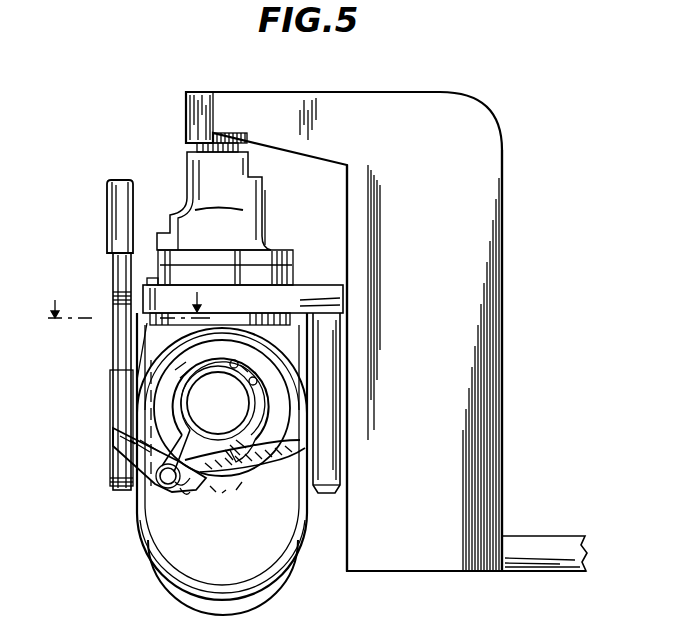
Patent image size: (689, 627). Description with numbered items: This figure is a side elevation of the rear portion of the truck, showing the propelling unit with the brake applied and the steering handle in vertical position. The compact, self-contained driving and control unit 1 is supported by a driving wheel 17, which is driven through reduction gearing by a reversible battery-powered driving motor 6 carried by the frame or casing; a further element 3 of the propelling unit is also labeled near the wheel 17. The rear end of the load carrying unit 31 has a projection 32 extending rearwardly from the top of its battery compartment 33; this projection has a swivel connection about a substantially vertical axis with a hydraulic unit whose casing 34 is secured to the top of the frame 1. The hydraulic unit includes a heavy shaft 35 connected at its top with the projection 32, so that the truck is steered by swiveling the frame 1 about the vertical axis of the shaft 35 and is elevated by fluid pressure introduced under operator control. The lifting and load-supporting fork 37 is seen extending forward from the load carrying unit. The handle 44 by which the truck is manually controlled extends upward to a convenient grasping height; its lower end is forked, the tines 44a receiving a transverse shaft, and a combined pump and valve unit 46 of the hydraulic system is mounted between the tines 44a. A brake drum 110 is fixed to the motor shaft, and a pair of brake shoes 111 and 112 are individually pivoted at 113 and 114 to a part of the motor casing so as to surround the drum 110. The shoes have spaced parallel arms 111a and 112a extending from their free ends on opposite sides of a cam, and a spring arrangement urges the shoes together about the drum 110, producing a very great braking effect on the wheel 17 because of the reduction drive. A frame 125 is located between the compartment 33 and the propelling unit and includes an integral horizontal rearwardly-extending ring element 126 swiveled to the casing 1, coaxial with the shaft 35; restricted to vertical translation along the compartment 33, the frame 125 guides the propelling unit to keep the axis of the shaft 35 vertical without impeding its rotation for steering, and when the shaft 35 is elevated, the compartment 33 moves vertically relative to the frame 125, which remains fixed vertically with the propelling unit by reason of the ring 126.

The driving and control unit 1 is at (136, 527).
The rim 3 is at (290, 540).
The driving motor 6 is at (145, 391).
The driving wheel 17 is at (207, 588).
The load carrying unit 31 is at (506, 360).
The projection 32 is at (292, 100).
The battery compartment 33 is at (480, 444).
The casing 34 is at (258, 229).
The shaft 35 is at (208, 150).
The fork 37 is at (532, 546).
The handle 44 is at (118, 207).
The tine 44a is at (120, 341).
The combined pump and valve unit 46 is at (118, 462).
The brake drum 110 is at (235, 412).
The brake shoe 111 is at (257, 468).
The arm 111a is at (184, 488).
The brake shoe 112 is at (182, 388).
The arm 112a is at (172, 425).
The pivot 113 is at (258, 382).
The pivot 114 is at (235, 360).
The frame 125 is at (326, 493).
The ring element 126 is at (302, 290).